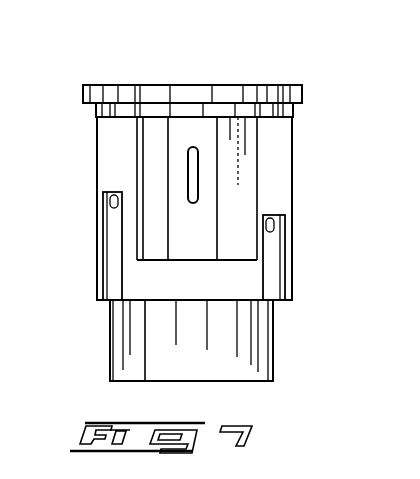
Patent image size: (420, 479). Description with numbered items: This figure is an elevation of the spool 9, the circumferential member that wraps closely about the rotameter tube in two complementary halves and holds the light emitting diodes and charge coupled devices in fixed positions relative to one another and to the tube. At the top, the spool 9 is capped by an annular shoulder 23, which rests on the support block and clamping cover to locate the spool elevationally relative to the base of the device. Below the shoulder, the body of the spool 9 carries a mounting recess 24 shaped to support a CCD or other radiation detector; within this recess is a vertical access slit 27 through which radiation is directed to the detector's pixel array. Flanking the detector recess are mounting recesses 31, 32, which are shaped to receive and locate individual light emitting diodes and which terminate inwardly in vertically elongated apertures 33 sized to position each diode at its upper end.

The spool 9 is at (290, 52).
The annular shoulder 23 is at (304, 94).
The mounting recess 24 is at (207, 252).
The vertical access slit 27 is at (190, 147).
The mounting recess 31 is at (112, 247).
The mounting recess 32 is at (270, 277).
The vertically elongated aperture 33 is at (110, 203).